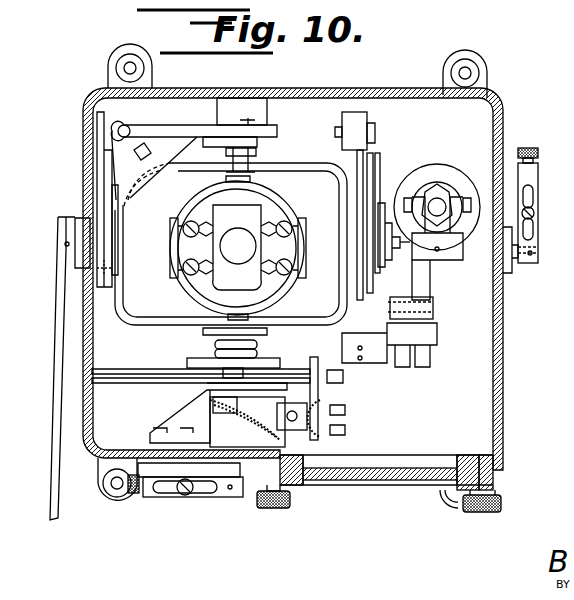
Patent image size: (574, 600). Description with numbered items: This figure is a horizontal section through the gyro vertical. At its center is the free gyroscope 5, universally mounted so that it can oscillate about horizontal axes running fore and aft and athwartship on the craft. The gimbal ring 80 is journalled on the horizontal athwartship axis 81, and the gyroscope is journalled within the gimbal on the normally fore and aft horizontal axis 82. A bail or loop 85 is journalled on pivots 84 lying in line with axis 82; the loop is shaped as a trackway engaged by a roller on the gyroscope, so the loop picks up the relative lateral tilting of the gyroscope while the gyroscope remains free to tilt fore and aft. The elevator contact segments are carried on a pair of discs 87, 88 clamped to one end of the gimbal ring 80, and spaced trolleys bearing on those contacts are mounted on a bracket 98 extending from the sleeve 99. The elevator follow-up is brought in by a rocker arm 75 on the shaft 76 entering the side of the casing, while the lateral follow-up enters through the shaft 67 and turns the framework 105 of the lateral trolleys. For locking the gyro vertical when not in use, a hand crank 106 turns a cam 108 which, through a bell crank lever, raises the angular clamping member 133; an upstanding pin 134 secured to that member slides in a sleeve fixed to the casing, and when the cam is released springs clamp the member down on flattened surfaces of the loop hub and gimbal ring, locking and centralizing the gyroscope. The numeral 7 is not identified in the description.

The free gyroscope 5 is at (197, 284).
The housing 7 is at (328, 278).
The shaft 67 is at (232, 478).
The rocker arm 75 is at (540, 182).
The shaft 76 is at (538, 263).
The gimbal ring 80 is at (312, 165).
The athwartship axis 81 is at (118, 245).
The fore and aft axis 82 is at (243, 178).
The pivots 84 is at (245, 123).
The bail or loop 85 is at (226, 152).
The disc 87 is at (376, 160).
The disc 88 is at (366, 160).
The bracket 98 is at (451, 248).
The sleeve 99 is at (435, 250).
The framework 105 is at (343, 421).
The hand crank 106 is at (70, 384).
The cam 108 is at (103, 223).
The angular clamping member 133 is at (164, 134).
The upstanding pin 134 is at (122, 128).